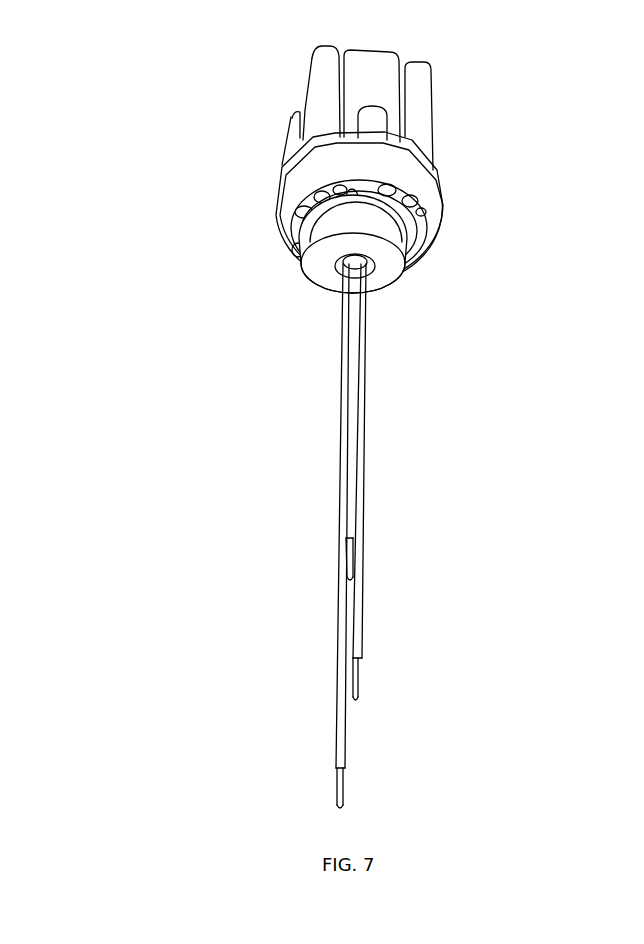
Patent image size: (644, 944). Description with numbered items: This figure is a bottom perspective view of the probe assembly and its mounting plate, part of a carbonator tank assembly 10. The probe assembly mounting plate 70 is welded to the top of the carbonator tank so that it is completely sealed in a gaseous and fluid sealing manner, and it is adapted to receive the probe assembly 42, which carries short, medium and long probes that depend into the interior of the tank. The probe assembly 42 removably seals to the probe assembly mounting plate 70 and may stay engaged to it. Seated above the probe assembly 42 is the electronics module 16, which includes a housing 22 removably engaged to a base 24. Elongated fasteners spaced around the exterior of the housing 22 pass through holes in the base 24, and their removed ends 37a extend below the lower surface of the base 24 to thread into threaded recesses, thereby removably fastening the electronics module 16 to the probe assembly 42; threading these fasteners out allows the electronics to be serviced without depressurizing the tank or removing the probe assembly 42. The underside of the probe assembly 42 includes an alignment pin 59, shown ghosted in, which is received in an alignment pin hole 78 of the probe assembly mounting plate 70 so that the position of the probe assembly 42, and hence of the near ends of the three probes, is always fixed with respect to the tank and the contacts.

The carbonator tank assembly 10 is at (178, 237).
The electronics module 16 is at (452, 80).
The housing 22 is at (552, 135).
The base 24 is at (285, 178).
The removed ends of fasteners 37a is at (546, 209).
The probe assembly 42 is at (443, 250).
The alignment pin 59 is at (283, 263).
The probe assembly mounting plate 70 is at (386, 288).
The alignment pin hole 78 is at (332, 183).